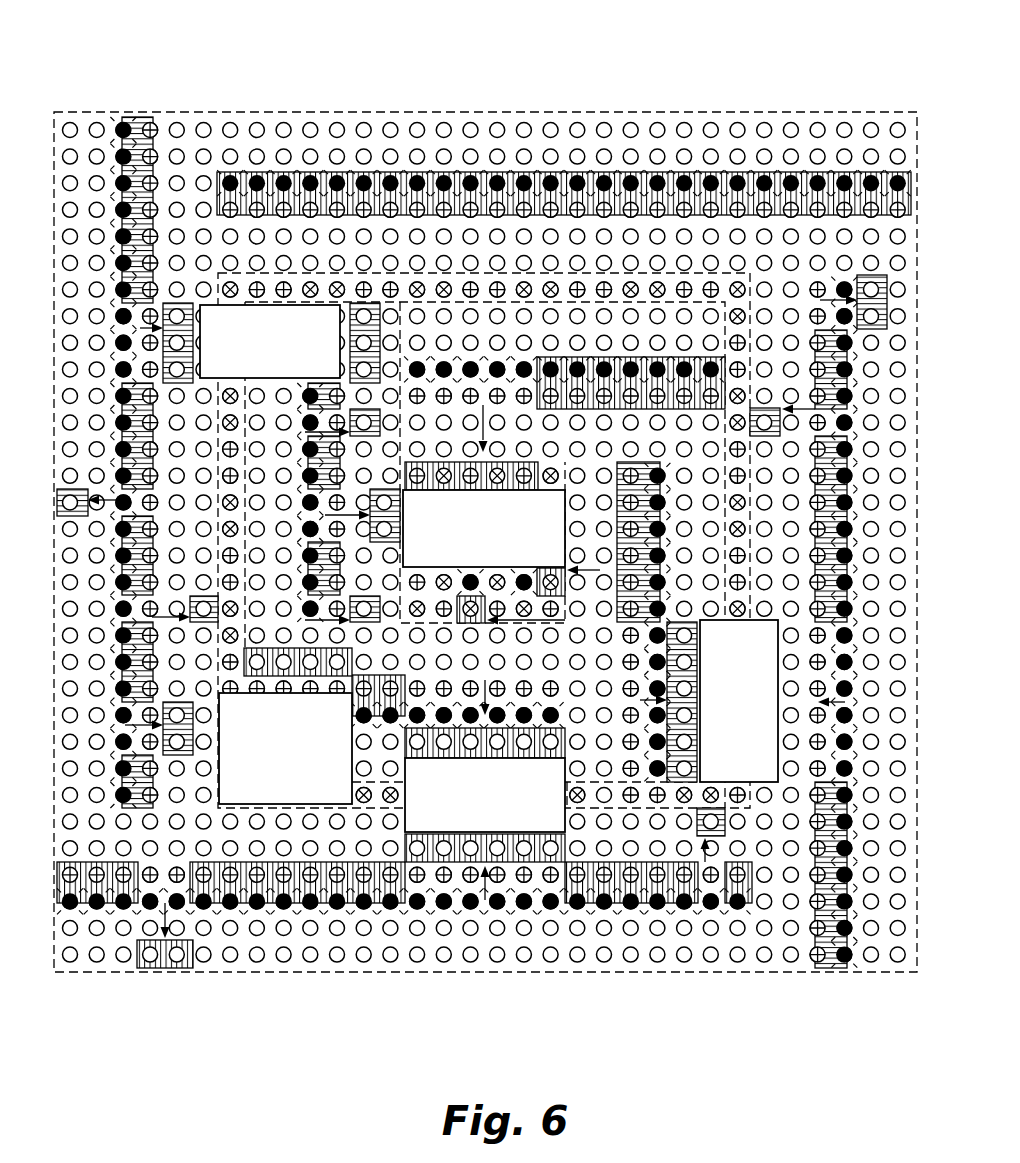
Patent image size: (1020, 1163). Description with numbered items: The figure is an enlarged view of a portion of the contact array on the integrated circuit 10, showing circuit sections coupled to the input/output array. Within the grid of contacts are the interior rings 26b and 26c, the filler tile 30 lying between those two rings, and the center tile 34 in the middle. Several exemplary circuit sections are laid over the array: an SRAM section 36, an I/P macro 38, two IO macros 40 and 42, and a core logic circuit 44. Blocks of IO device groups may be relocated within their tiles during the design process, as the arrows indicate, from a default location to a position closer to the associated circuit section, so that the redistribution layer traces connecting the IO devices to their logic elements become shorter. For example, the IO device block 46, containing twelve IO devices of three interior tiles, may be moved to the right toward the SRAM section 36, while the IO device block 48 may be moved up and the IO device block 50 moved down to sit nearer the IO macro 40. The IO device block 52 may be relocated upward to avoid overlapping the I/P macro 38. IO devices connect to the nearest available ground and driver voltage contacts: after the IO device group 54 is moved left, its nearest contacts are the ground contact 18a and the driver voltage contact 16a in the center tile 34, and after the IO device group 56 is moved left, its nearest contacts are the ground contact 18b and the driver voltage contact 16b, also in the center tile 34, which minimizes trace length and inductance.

The integrated circuit 10 is at (838, 56).
The IO device block 46 is at (170, 300).
The interior ring 26b is at (265, 110).
The filler tile 30 is at (300, 280).
The interior ring 26c is at (400, 300).
The center tile 34 is at (562, 360).
The SRAM section 36 is at (258, 372).
The core logic circuit 44 is at (511, 524).
The driver voltage contact 16b is at (470, 574).
The driver voltage contact 16a is at (522, 574).
The IO device group 54 is at (548, 567).
The ground contact 18b is at (443, 618).
The IO device group 56 is at (473, 624).
The ground contact 18a is at (553, 619).
The I/P macro 38 is at (273, 789).
The IO macro 40 is at (473, 819).
The IO macro 42 is at (727, 705).
The IO device block 52 is at (245, 665).
The IO device block 48 is at (538, 855).
The IO device block 50 is at (570, 738).